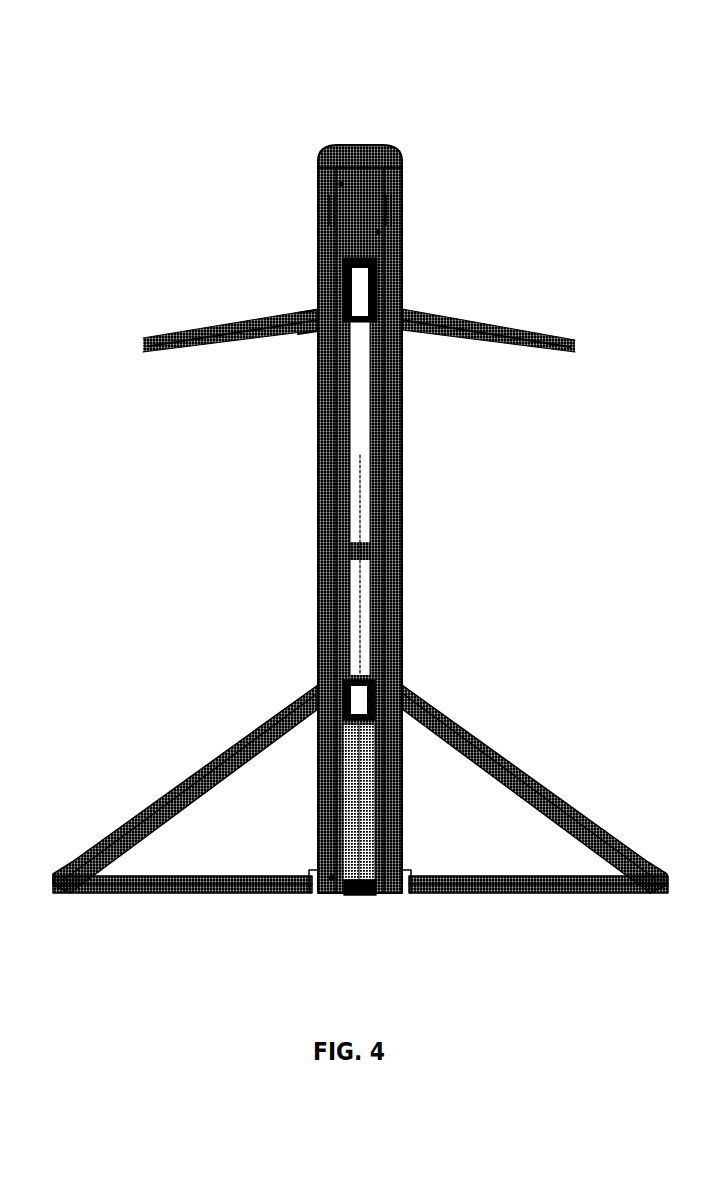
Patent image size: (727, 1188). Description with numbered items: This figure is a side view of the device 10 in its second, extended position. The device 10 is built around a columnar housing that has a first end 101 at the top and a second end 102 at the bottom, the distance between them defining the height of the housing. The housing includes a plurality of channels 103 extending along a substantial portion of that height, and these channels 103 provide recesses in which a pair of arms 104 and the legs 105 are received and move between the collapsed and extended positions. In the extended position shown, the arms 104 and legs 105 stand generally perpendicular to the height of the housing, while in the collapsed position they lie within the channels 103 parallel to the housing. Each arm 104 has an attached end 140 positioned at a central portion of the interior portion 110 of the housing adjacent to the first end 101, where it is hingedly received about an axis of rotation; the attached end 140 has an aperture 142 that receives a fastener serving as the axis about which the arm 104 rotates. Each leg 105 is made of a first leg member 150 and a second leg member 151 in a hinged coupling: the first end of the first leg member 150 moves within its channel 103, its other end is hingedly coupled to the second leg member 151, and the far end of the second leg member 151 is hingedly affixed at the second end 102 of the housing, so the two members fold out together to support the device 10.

The device 10 is at (128, 75).
The first end 101 is at (402, 165).
The second end 102 is at (336, 893).
The channels 103 is at (370, 455).
The arms 104 is at (250, 322).
The legs 105 is at (167, 745).
The interior portion 110 is at (363, 405).
The attached end 140 is at (308, 325).
The aperture 142 is at (356, 316).
The first leg member 150 is at (237, 753).
The second leg member 151 is at (176, 892).